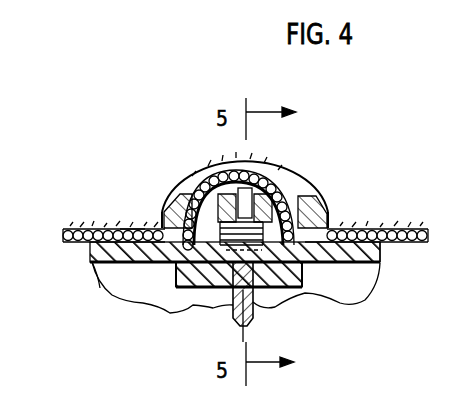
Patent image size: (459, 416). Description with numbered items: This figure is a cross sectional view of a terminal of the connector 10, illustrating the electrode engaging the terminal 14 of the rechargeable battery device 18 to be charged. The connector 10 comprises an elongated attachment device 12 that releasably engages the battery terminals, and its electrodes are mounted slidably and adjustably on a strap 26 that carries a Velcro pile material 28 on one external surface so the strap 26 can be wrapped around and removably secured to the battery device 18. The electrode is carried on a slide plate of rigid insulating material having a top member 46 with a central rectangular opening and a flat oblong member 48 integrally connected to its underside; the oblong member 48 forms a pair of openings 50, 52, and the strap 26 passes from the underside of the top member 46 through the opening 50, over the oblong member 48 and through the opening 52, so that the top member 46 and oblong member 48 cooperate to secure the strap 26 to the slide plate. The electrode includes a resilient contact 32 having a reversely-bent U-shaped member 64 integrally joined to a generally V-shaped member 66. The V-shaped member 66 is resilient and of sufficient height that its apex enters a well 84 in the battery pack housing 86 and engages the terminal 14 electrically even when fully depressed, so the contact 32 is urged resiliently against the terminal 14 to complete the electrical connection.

The connector 10 is at (298, 148).
The attachment device 12 is at (125, 215).
The terminal 14 is at (255, 298).
The rechargeable battery device 18 is at (382, 263).
The strap 26 is at (83, 228).
The Velcro pile material 28 is at (390, 228).
The contact 32 is at (178, 259).
The top member 46 is at (336, 208).
The oblong member 48 is at (228, 165).
The opening 50 is at (196, 196).
The opening 52 is at (308, 183).
The reversely-bent U-shaped member 64 is at (315, 263).
The V-shaped member 66 is at (223, 268).
The well 84 is at (165, 262).
The battery pack housing 86 is at (97, 250).